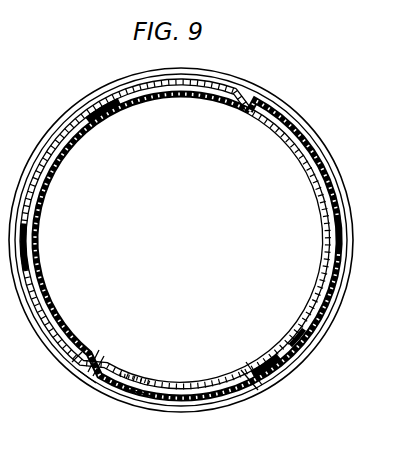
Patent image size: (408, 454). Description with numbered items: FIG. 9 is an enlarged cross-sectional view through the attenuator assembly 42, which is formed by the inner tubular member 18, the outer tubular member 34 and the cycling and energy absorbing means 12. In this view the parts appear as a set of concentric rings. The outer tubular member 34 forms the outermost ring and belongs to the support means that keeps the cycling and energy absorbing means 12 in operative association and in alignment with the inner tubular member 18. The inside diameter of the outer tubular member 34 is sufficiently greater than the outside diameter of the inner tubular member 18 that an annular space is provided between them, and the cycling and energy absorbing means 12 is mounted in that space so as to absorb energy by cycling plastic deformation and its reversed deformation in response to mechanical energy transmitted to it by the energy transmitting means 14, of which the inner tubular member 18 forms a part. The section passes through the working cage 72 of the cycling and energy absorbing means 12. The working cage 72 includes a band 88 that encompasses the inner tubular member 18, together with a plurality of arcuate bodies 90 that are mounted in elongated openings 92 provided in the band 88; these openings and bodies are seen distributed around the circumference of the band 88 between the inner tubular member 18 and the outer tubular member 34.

The attenuator assembly 42 is at (295, 101).
The outer tubular member 34 is at (188, 407).
The energy transmitting means 14 is at (310, 209).
The cycling and energy absorbing means 12 is at (221, 380).
The inner tubular member 18 is at (132, 377).
The working cage 72 is at (266, 381).
The band 88 is at (100, 380).
The arcuate bodies 90 is at (138, 398).
The elongated openings 92 is at (80, 366).